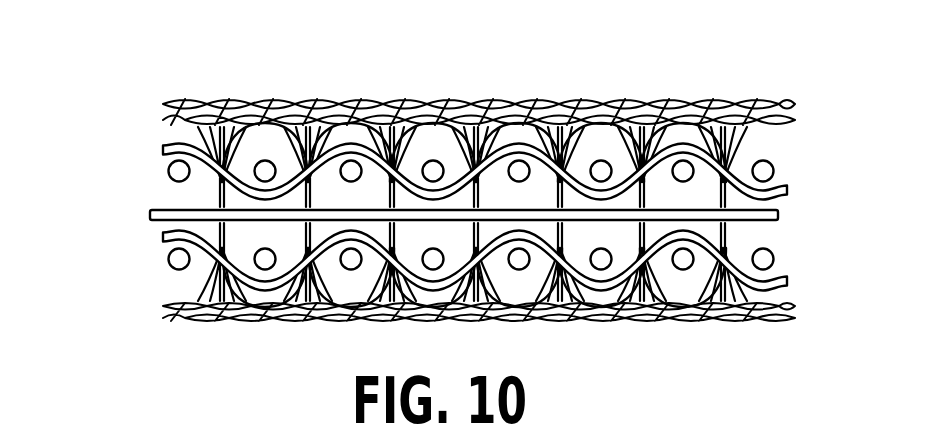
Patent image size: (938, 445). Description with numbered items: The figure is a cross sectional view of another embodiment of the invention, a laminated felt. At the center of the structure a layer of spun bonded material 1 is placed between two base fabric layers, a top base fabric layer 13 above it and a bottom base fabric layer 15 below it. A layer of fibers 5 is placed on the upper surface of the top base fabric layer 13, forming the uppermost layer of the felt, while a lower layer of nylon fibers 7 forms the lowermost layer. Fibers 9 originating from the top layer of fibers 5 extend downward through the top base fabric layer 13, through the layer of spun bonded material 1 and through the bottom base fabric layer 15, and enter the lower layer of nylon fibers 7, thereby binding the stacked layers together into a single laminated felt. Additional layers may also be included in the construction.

The layer of spun bonded material 1 is at (166, 211).
The layer of fibers 5 is at (197, 97).
The lower layer of nylon fibers 7 is at (180, 303).
The fibers 9 is at (243, 248).
The top base fabric layer 13 is at (122, 161).
The bottom base fabric layer 15 is at (122, 258).